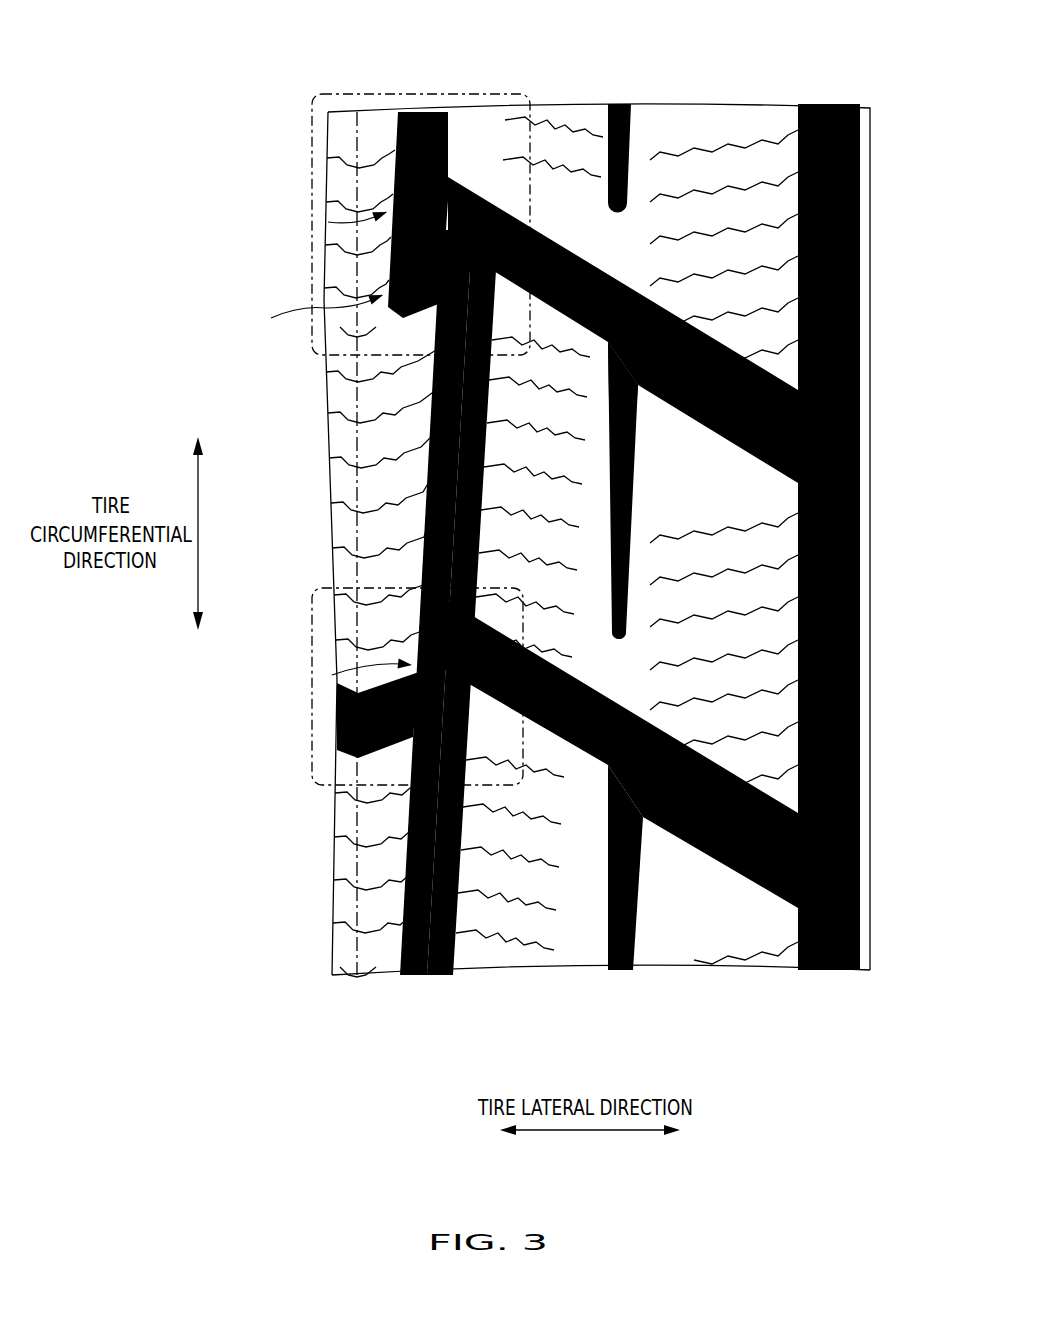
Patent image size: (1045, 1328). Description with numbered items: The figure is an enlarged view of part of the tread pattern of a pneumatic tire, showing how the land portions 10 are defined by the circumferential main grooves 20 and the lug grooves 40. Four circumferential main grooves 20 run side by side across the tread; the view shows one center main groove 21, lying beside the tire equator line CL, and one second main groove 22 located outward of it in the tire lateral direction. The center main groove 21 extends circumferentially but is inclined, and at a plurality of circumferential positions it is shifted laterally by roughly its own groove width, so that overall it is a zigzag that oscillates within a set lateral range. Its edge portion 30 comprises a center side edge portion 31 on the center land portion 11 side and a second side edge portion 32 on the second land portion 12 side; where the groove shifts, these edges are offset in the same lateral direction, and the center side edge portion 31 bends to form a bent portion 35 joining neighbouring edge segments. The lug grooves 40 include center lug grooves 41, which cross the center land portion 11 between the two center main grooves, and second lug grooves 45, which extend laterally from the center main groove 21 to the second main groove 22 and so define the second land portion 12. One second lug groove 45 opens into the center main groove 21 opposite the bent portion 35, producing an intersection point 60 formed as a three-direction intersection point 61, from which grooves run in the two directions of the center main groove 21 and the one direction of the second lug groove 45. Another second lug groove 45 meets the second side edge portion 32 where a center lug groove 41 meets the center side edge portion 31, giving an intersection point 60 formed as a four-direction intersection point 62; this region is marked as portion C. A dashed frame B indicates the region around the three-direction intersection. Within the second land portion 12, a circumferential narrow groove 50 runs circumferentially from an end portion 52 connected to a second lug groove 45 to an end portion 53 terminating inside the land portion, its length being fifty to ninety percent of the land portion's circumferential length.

The land portions 10 is at (557, 505).
The center land portion 11 is at (378, 137).
The second land portion 12 is at (707, 167).
The circumferential main grooves 20 is at (633, 485).
The center main groove 21 is at (431, 112).
The second main groove 22 is at (826, 124).
The edge portion 30 is at (447, 646).
The center side edge portion 31 is at (403, 938).
The second side edge portion 32 is at (458, 903).
The bent portion 35 is at (317, 304).
The lug grooves 40 is at (574, 542).
The center lug groove 41 is at (388, 747).
The second lug groove 45 is at (731, 352).
The circumferential narrow groove 50 is at (758, 504).
The end portion 52 is at (639, 388).
The end portion 53 is at (619, 641).
The intersection point 60 is at (311, 450).
The three-direction intersection point 61 is at (328, 222).
The four-direction intersection point 62 is at (332, 675).
The region B is at (505, 93).
The portion C is at (310, 729).
The tire equator line CL is at (352, 400).